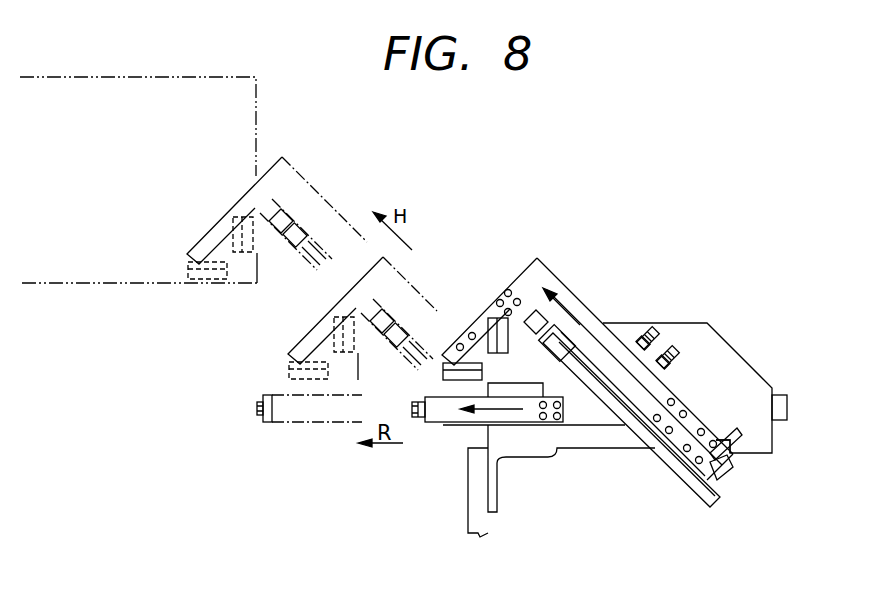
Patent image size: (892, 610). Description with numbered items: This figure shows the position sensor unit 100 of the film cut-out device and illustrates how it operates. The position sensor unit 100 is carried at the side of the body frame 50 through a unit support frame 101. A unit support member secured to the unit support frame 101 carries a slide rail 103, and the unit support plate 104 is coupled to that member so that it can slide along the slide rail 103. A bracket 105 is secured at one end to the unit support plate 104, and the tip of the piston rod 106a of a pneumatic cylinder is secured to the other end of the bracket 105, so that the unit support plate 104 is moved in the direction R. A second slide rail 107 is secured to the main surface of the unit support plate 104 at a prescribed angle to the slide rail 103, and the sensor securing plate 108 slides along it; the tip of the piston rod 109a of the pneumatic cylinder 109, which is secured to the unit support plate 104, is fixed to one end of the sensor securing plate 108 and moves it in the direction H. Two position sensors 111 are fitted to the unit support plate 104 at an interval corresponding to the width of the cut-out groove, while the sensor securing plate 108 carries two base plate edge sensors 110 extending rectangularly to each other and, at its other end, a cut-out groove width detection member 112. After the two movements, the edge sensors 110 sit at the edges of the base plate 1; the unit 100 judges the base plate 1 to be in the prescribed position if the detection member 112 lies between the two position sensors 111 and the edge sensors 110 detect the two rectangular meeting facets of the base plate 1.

The base plate 1 is at (231, 76).
The body frame 50 is at (470, 505).
The position sensor unit 100 is at (726, 383).
The unit support frame 101 is at (550, 450).
The slide rail 103 is at (787, 407).
The unit support plate 104 is at (723, 348).
The bracket 105 is at (295, 415).
The piston rod 106a is at (415, 417).
The slide rail 107 is at (737, 468).
The sensor securing plate 108 is at (361, 280).
The pneumatic cylinder 109 is at (700, 492).
The piston rod 109a is at (519, 294).
The base plate edge sensors 110 is at (228, 205).
The position sensors 111 is at (672, 345).
The cut-out groove width detection member 112 is at (752, 432).